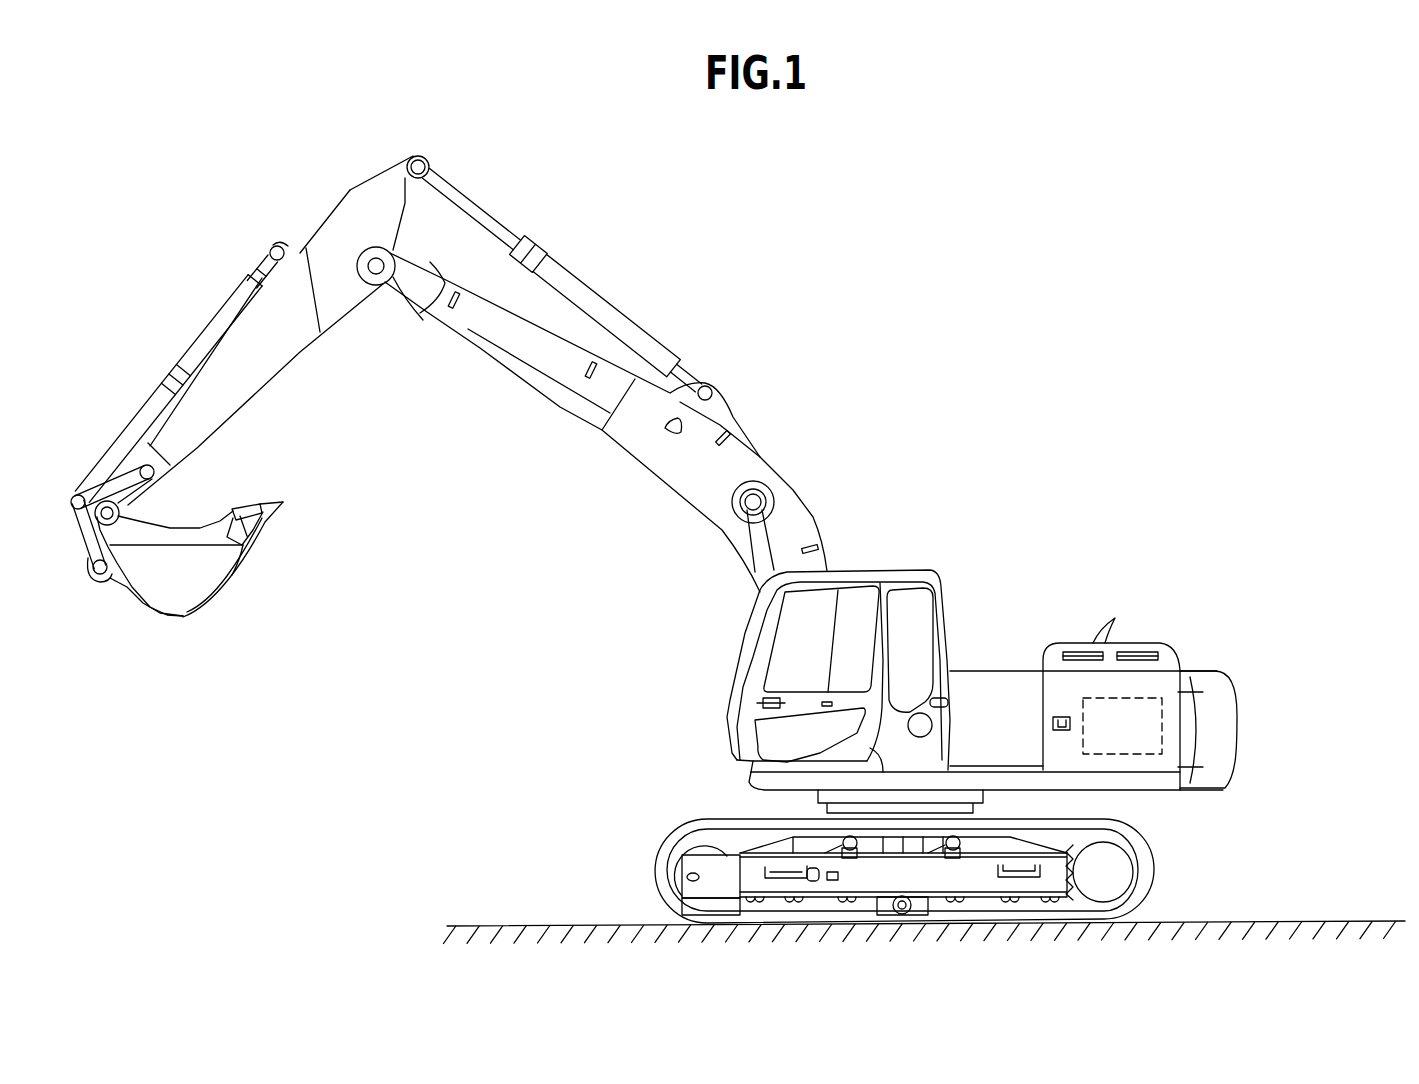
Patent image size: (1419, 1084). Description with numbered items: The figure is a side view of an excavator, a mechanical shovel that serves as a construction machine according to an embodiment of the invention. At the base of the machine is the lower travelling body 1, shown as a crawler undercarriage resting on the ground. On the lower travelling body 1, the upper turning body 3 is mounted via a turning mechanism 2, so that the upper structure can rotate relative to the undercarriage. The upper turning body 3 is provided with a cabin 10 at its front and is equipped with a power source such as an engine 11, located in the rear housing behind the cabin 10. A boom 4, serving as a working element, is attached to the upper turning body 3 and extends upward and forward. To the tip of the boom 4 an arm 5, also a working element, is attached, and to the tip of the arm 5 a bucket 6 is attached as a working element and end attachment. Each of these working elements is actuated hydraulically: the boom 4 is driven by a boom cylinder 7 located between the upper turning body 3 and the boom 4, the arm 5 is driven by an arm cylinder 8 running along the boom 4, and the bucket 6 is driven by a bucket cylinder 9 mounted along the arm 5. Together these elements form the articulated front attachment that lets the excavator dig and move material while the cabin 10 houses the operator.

The lower travelling body 1 is at (657, 883).
The turning mechanism 2 is at (977, 803).
The upper turning body 3 is at (1000, 670).
The boom 4 is at (645, 448).
The arm 5 is at (282, 348).
The bucket 6 is at (170, 610).
The boom cylinder 7 is at (767, 543).
The arm cylinder 8 is at (632, 330).
The bucket cylinder 9 is at (215, 332).
The cabin 10 is at (923, 568).
The engine 11 is at (1157, 700).